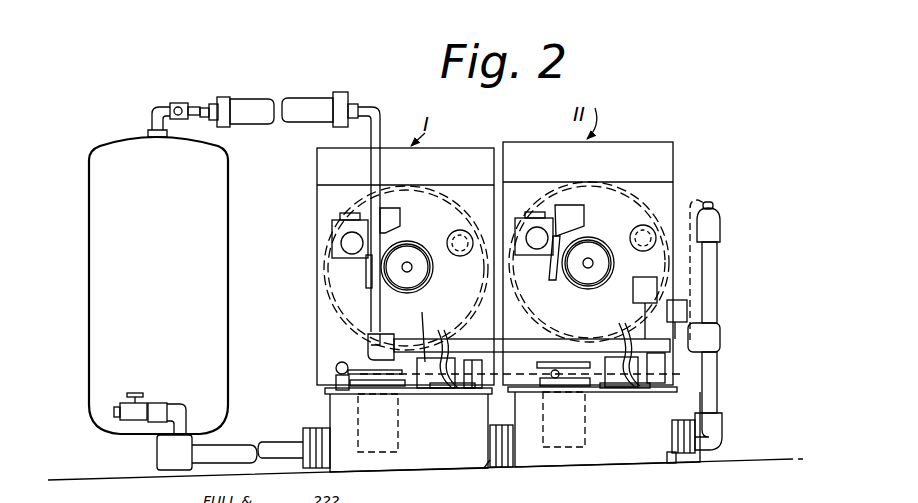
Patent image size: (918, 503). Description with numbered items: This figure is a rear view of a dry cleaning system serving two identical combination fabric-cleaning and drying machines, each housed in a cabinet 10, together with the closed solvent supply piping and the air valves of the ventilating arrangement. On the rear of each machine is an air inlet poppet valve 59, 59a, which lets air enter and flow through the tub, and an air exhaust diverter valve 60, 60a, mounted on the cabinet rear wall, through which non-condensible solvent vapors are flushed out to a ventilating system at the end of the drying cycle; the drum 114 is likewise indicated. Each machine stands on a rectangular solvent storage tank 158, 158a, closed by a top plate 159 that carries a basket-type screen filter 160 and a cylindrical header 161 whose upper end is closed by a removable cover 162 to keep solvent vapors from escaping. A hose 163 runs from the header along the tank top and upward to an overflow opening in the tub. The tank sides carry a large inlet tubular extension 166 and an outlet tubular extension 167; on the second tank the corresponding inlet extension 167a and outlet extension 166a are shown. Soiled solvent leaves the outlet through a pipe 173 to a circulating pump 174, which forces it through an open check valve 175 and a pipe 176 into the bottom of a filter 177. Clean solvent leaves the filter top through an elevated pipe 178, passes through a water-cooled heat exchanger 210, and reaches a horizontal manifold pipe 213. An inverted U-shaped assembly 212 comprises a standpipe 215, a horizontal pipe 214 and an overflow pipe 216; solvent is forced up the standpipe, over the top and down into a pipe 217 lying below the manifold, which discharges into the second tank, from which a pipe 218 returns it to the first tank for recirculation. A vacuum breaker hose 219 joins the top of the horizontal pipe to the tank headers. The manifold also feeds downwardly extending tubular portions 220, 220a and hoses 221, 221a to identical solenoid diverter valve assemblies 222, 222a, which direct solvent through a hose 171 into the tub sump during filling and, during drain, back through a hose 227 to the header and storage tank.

The cabinet 10 is at (314, 213).
The air inlet poppet valve 59 is at (471, 231).
The air inlet poppet valve 59a is at (648, 223).
The air exhaust diverter valve 60 is at (346, 211).
The air exhaust diverter valve 60a is at (530, 206).
The drum 114 is at (438, 225).
The solvent storage tank 158 is at (455, 456).
The solvent storage base tank 158a is at (650, 452).
The top plate 159 is at (328, 391).
The basket-type screen filter 160 is at (388, 452).
The cylindrical header 161 is at (336, 374).
The removable cover 162 is at (370, 362).
The hose 163 is at (368, 336).
The tubular extension 166 is at (322, 433).
The outlet tubular extension 166a is at (514, 448).
The tubular extension 167 is at (489, 462).
The inlet tubular extension 167a is at (677, 456).
The hose 171 is at (436, 350).
The pipe 173 is at (243, 446).
The circulating pump 174 is at (151, 455).
The check valve 175 is at (140, 395).
The pipe 176 is at (181, 405).
The filter 177 is at (88, 272).
The pipe 178 is at (190, 103).
The water-cooled heat exchanger 210 is at (305, 97).
The inverted U-shaped assembly 212 is at (721, 203).
The horizontal manifold pipe 213 is at (480, 339).
The horizontal pipe 214 is at (722, 228).
The standpipe 215 is at (714, 275).
The overflow pipe 216 is at (718, 383).
The pipe 217 is at (726, 428).
The pipe 218 is at (505, 456).
The vacuum breaker hose 219 is at (700, 196).
The downwardly extending tubular portion 220 is at (444, 350).
The downwardly extending tubular portion 220a is at (626, 334).
The hose 221 is at (455, 394).
The hose 221a is at (627, 389).
The diverter valve assembly 222 is at (430, 327).
The diverter valve assembly 222a is at (585, 332).
The hose 227 is at (422, 391).